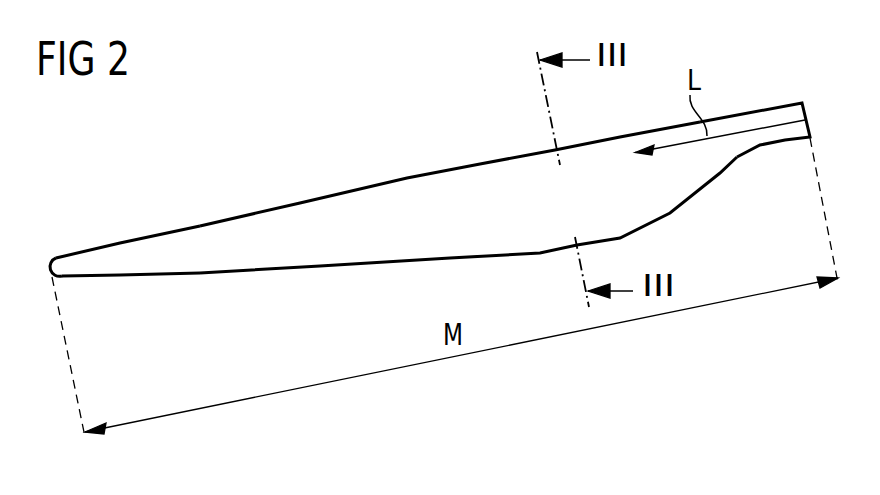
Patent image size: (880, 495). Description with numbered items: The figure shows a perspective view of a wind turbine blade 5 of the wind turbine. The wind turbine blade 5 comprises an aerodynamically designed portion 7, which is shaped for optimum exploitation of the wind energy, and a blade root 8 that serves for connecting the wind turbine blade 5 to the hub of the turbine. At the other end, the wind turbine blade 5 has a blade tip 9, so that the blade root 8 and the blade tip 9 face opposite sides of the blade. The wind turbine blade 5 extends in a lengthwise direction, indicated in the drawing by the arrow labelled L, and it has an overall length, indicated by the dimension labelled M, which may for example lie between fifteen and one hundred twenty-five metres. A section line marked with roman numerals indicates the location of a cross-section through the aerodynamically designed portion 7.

The rotor blade 5 is at (392, 142).
The root portion 7 is at (120, 255).
The blade tip 8 is at (793, 110).
The root end 9 is at (54, 257).